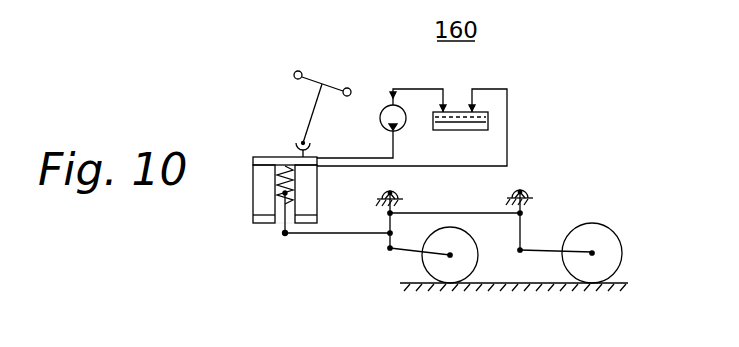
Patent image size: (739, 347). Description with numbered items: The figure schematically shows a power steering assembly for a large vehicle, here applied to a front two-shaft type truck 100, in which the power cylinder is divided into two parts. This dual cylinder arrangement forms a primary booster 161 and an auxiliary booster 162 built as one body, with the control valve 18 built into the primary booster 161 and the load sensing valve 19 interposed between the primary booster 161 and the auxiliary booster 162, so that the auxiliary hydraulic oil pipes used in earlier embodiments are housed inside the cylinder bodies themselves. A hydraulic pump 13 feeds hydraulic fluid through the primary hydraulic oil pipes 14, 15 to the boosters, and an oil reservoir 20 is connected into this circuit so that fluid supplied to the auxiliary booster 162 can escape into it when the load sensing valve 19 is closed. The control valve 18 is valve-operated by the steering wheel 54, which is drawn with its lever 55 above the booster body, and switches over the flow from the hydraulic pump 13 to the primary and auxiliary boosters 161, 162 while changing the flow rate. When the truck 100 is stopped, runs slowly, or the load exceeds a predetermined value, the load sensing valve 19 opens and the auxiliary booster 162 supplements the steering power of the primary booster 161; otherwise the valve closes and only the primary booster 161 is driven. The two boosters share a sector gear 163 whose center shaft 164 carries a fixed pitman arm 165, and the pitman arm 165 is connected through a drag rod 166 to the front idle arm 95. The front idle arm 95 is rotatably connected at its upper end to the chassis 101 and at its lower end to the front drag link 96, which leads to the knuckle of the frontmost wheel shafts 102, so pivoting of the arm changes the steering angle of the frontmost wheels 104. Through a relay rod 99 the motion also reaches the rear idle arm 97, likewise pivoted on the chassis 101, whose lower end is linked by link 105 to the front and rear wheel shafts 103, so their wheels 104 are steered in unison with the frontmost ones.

The hydraulic pump 13 is at (383, 102).
The primary hydraulic oil pipe 14 is at (398, 158).
The primary hydraulic oil pipe 15 is at (508, 118).
The control valve 18 is at (318, 153).
The load sensing valve 19 is at (277, 153).
The oil reservoir 20 is at (468, 130).
The steering wheel 54 is at (310, 72).
The control lever 55 is at (310, 120).
The front idle arm 95 is at (388, 249).
The front drag link 96 is at (405, 250).
The rear idle arm 97 is at (523, 240).
The relay rod 99 is at (448, 212).
The truck 100 is at (562, 194).
The chassis 101 is at (399, 200).
The frontmost wheel shafts 102 is at (450, 256).
The front and rear wheel shafts 103 is at (593, 252).
The wheels 104 is at (480, 254).
The link 105 is at (543, 252).
The primary booster 161 is at (318, 208).
The auxiliary booster 162 is at (252, 202).
The sector gear 163 is at (275, 178).
The center shaft 164 is at (258, 225).
The pitman arm 165 is at (285, 232).
The drag rod 166 is at (331, 235).